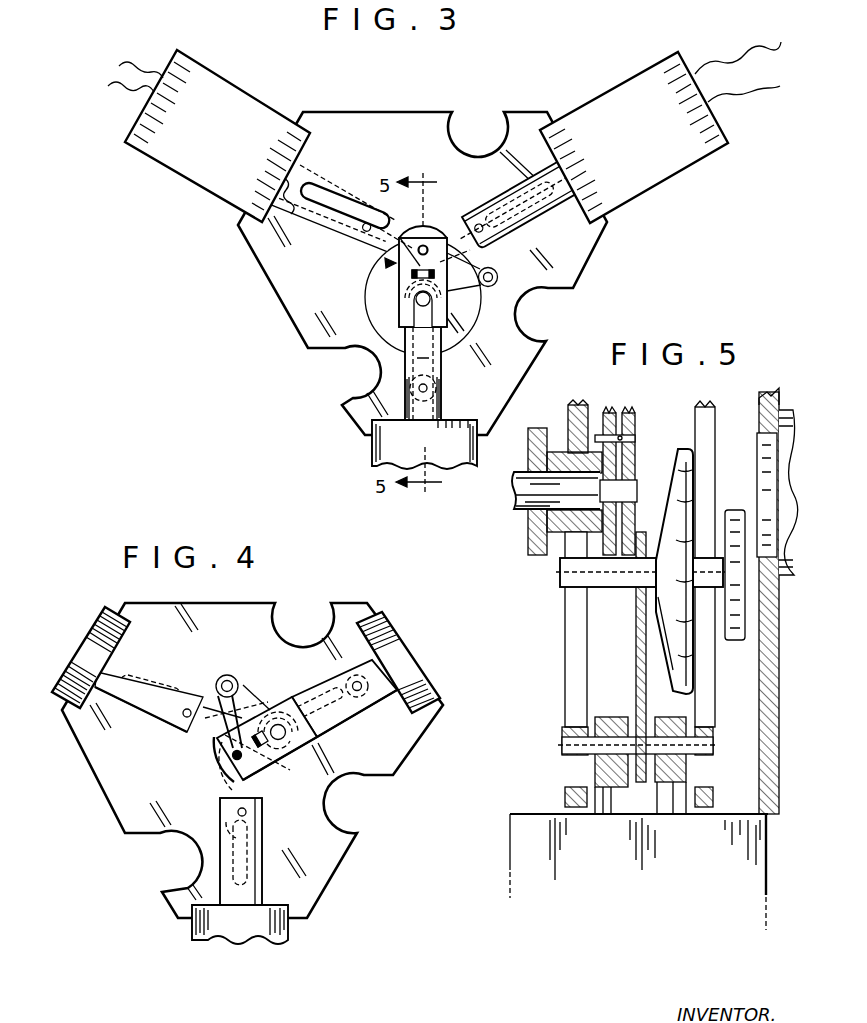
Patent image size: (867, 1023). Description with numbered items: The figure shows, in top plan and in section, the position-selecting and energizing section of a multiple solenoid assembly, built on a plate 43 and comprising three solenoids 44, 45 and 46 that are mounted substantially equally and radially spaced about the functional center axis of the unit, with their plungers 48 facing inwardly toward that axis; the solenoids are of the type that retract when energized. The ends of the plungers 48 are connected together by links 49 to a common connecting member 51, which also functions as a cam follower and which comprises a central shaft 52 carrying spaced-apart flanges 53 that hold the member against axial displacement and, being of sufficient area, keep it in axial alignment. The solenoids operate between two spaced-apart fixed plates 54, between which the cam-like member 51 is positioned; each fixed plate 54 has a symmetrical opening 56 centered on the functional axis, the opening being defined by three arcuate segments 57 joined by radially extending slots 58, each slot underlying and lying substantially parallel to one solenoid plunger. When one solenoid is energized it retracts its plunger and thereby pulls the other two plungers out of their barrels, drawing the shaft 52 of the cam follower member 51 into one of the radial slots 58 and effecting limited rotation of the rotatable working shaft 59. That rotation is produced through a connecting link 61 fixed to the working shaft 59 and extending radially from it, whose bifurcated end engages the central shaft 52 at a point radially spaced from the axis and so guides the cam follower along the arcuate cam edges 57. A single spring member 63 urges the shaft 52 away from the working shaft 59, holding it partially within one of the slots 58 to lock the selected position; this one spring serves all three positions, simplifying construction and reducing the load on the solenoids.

In FIG. 3, the mounting plate 43 is at (604, 267).
In FIG. 4, the mounting plate 43 is at (115, 845).
In FIG. 3, the solenoid 44 is at (247, 156).
In FIG. 4, the solenoid 44 is at (80, 664).
In FIG. 3, the solenoid 45 is at (617, 181).
In FIG. 4, the solenoid 45 is at (412, 672).
In FIG. 3, the solenoid 46 is at (414, 452).
In FIG. 4, the solenoid 46 is at (244, 932).
In FIG. 3, the plunger 48 is at (503, 200).
In FIG. 4, the plunger 48 is at (155, 718).
In FIG. 4, the link 49 is at (198, 730).
In FIG. 5, the common connecting member 51 is at (677, 462).
In FIG. 3, the central shaft 52 is at (418, 302).
In FIG. 4, the central shaft 52 is at (280, 742).
In FIG. 5, the central shaft 52 is at (571, 572).
In FIG. 5, the flange 53 is at (736, 635).
In FIG. 5, the fixed plate 54 is at (571, 709).
In FIG. 3, the opening 56 is at (386, 263).
In FIG. 3, the arcuate segment 57 is at (425, 229).
In FIG. 4, the arcuate segment 57 is at (210, 760).
In FIG. 3, the radially extending slot 58 is at (332, 215).
In FIG. 4, the radially extending slot 58 is at (152, 707).
In FIG. 3, the working shaft 59 is at (412, 273).
In FIG. 4, the working shaft 59 is at (258, 745).
In FIG. 5, the working shaft 59 is at (525, 505).
In FIG. 3, the connecting link 61 is at (382, 338).
In FIG. 4, the connecting link 61 is at (237, 777).
In FIG. 5, the connecting link 61 is at (611, 414).
In FIG. 3, the spring member 63 is at (494, 287).
In FIG. 4, the spring member 63 is at (237, 680).